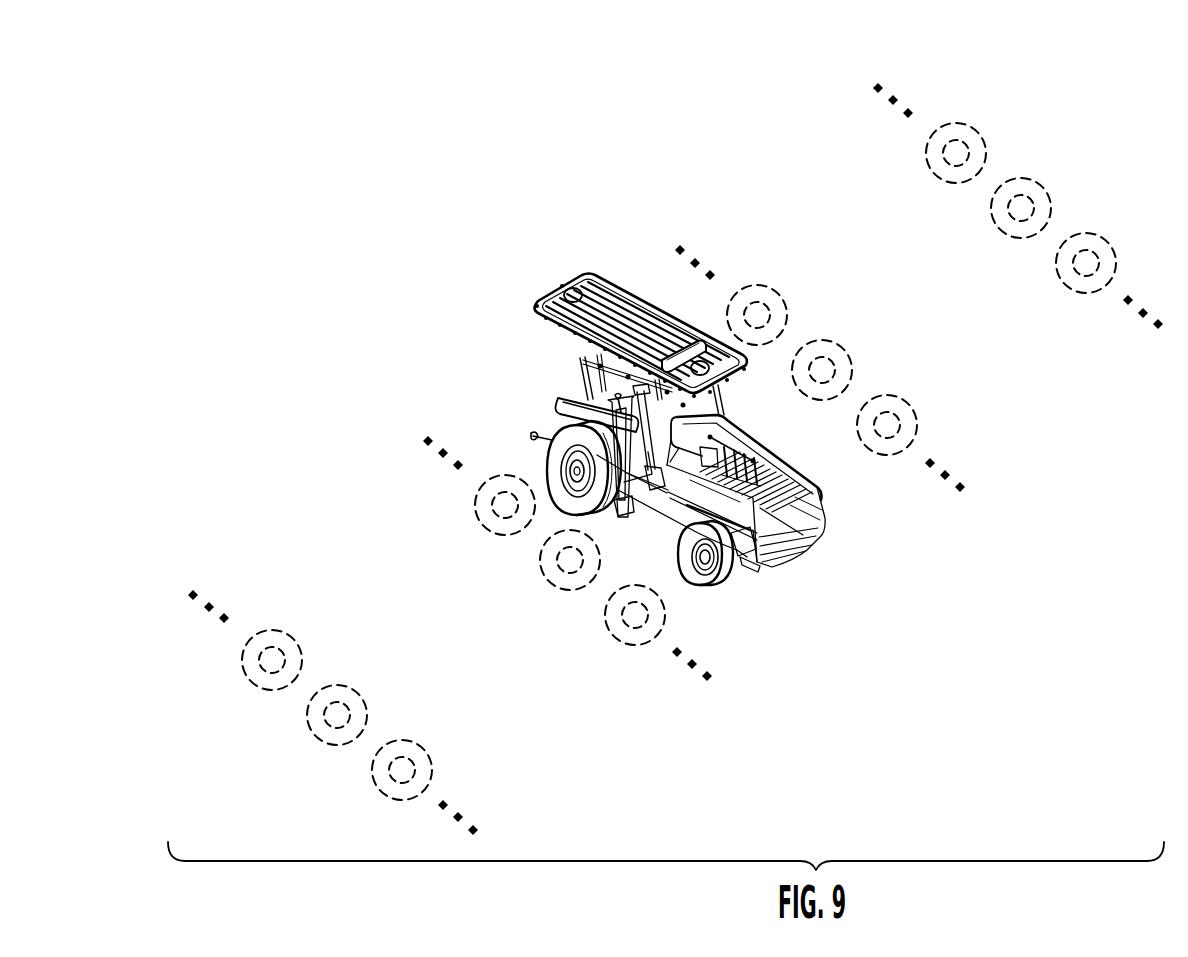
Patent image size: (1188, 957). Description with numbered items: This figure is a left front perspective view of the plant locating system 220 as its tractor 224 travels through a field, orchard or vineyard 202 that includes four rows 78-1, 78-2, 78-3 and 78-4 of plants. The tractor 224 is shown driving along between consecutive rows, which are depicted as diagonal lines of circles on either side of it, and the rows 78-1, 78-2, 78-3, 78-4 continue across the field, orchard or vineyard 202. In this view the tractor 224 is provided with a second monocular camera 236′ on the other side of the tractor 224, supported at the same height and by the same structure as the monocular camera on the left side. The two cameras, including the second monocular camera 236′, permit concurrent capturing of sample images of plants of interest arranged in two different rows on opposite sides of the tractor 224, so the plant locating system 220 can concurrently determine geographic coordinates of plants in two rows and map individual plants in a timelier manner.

The field, orchard or vineyard 202 is at (750, 96).
The plant locating system 220 is at (425, 198).
The tractor 224 is at (583, 277).
The second monocular camera 236′ is at (623, 500).
The row of plants 78-1 is at (193, 590).
The row of plants 78-2 is at (427, 436).
The row of plants 78-3 is at (681, 246).
The row of plants 78-4 is at (877, 84).